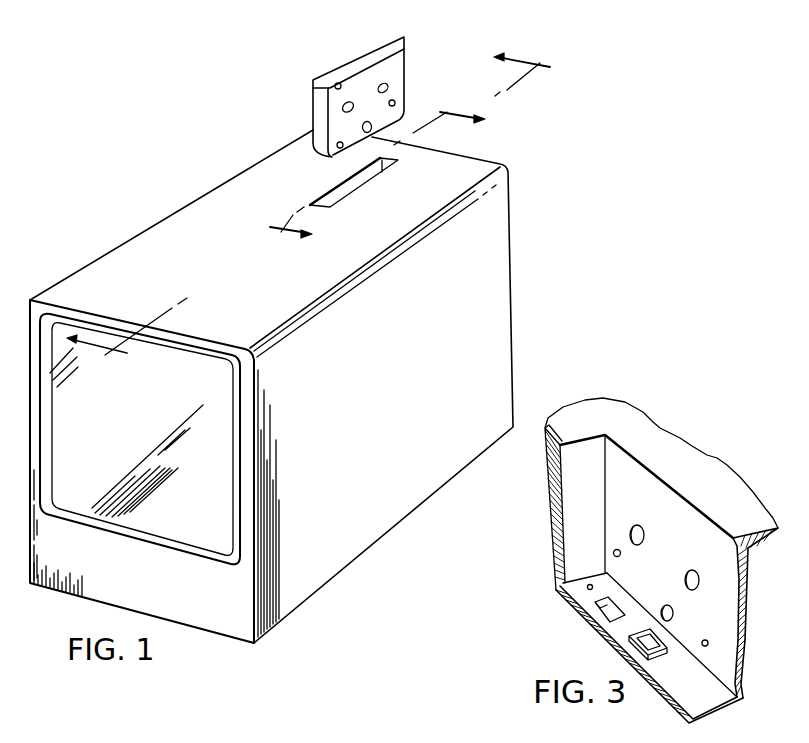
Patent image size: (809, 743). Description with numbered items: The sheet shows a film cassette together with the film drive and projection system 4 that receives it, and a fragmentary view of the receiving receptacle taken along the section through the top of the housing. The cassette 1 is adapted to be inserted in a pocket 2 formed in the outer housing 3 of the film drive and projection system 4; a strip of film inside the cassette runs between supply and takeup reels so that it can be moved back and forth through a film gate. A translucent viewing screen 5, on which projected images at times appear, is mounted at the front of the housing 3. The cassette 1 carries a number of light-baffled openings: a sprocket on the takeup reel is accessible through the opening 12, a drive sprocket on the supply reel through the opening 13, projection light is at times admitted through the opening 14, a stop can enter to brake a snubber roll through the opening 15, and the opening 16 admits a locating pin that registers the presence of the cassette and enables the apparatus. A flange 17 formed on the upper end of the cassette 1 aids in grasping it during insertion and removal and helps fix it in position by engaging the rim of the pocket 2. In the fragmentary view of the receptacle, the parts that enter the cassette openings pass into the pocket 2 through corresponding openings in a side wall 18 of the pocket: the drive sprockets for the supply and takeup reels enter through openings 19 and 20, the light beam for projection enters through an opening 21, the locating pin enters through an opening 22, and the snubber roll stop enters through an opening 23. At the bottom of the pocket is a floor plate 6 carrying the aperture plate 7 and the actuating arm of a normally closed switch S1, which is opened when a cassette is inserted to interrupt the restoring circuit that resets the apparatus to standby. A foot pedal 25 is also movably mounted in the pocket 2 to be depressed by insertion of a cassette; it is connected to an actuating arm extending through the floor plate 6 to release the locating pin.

In FIG. 1, the cassette 1 is at (376, 101).
In FIG. 1, the pocket 2 is at (301, 199).
In FIG. 3, the pocket 2 is at (629, 467).
In FIG. 1, the outer housing 3 is at (510, 242).
In FIG. 1, the film drive and projection system 4 is at (171, 203).
In FIG. 1, the translucent viewing screen 5 is at (233, 433).
In FIG. 3, the floor plate 6 is at (707, 697).
In FIG. 3, the aperture plate 7 is at (660, 656).
In FIG. 1, the opening 12 is at (351, 103).
In FIG. 1, the opening 13 is at (386, 84).
In FIG. 1, the opening 14 is at (367, 133).
In FIG. 1, the opening 15 is at (338, 150).
In FIG. 1, the opening 16 is at (396, 102).
In FIG. 1, the flange 17 is at (337, 83).
In FIG. 3, the side wall 18 is at (693, 507).
In FIG. 3, the opening 19 is at (637, 525).
In FIG. 3, the opening 20 is at (690, 567).
In FIG. 3, the opening 21 is at (674, 612).
In FIG. 3, the opening 22 is at (618, 558).
In FIG. 3, the opening 23 is at (707, 641).
In FIG. 3, the foot pedal 25 is at (603, 613).
In FIG. 3, the normally closed switch S1 is at (588, 589).